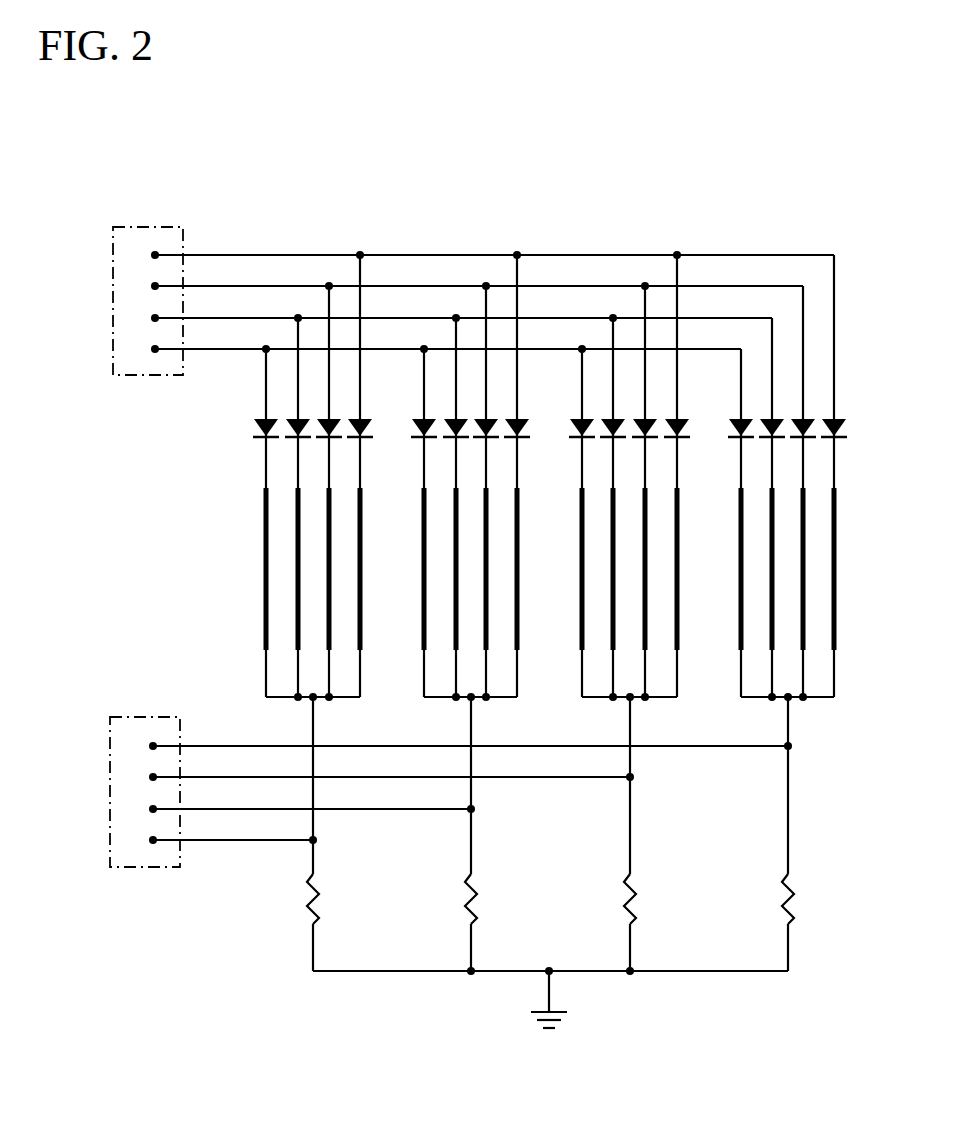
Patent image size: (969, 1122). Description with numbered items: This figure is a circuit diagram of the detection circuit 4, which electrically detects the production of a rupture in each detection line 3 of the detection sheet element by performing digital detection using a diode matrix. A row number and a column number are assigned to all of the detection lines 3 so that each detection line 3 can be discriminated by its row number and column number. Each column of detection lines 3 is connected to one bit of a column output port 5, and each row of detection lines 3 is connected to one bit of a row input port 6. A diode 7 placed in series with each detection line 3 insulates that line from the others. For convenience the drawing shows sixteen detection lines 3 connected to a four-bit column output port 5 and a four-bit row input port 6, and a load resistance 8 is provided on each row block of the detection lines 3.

The detection line 3 is at (362, 586).
The detection circuit 4 is at (548, 185).
The column output port 5 is at (166, 227).
The row input port 6 is at (163, 717).
The diode 7 is at (326, 418).
The load resistance 8 is at (319, 905).